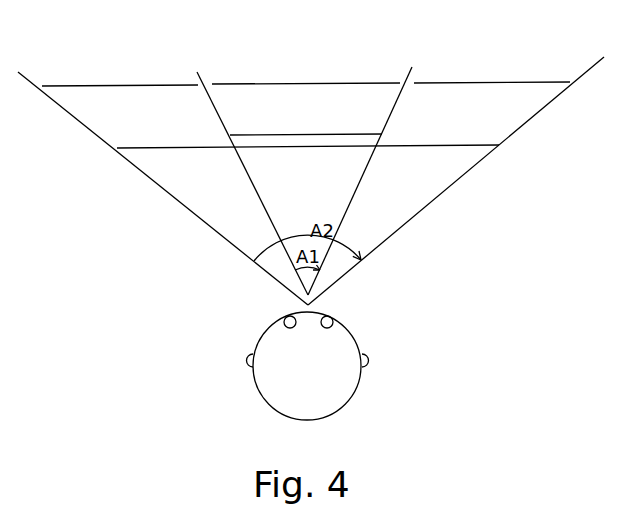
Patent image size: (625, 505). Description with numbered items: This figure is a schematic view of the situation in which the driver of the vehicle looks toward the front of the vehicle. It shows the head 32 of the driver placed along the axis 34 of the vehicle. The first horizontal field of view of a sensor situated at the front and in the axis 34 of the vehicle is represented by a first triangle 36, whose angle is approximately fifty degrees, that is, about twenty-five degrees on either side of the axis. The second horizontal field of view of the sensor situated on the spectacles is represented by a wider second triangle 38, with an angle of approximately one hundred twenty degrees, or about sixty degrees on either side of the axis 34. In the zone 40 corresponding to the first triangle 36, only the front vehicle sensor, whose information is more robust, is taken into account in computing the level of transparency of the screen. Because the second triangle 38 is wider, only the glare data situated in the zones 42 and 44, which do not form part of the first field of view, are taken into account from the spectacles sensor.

The head 32 is at (360, 387).
The axis 34 is at (310, 435).
The first triangle 36 is at (362, 134).
The second triangle 38 is at (453, 187).
The zone 40 is at (265, 83).
The zone 42 is at (107, 85).
The zone 44 is at (505, 82).